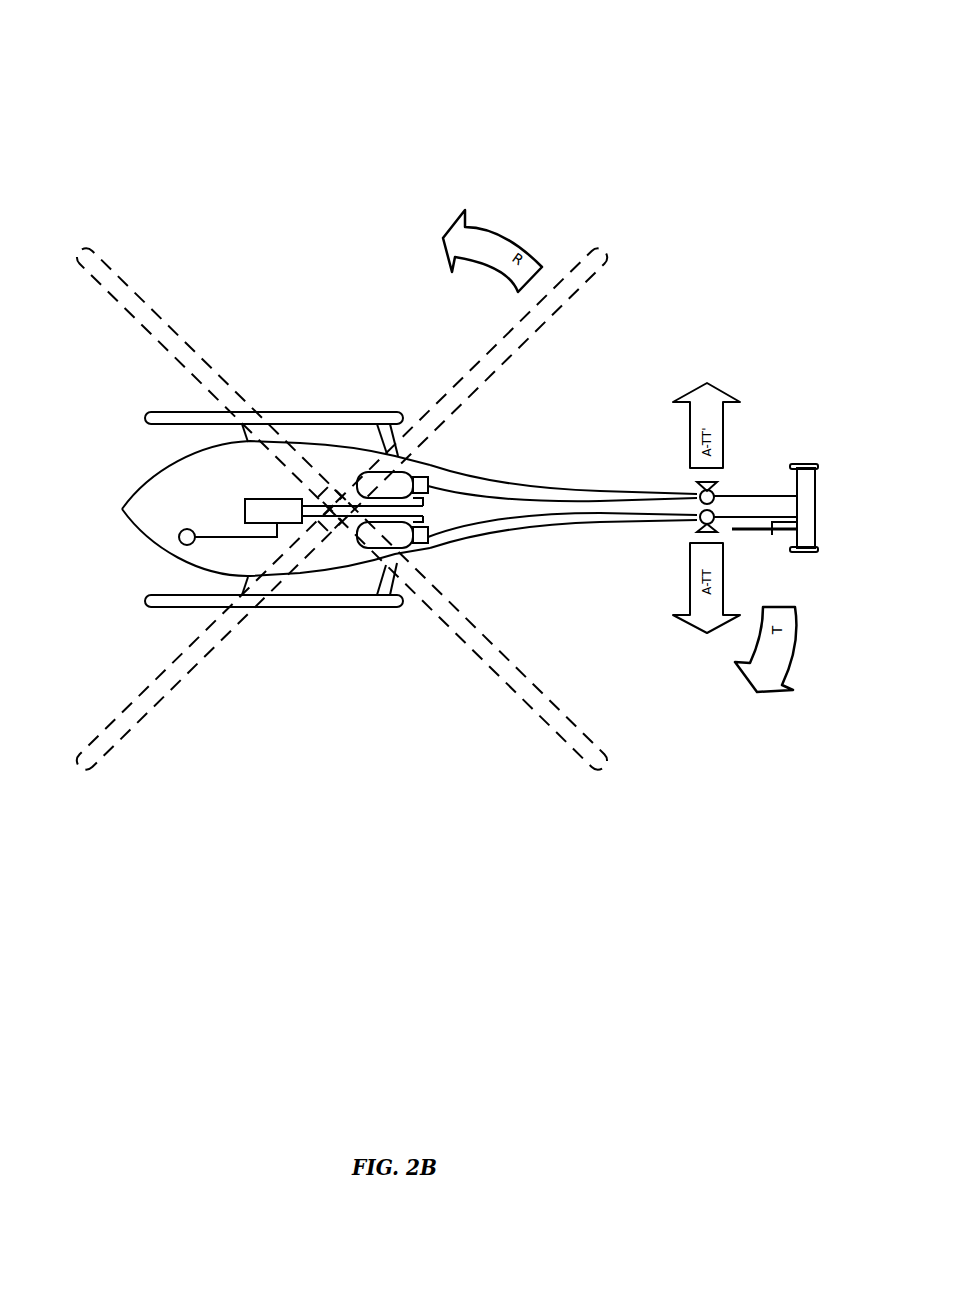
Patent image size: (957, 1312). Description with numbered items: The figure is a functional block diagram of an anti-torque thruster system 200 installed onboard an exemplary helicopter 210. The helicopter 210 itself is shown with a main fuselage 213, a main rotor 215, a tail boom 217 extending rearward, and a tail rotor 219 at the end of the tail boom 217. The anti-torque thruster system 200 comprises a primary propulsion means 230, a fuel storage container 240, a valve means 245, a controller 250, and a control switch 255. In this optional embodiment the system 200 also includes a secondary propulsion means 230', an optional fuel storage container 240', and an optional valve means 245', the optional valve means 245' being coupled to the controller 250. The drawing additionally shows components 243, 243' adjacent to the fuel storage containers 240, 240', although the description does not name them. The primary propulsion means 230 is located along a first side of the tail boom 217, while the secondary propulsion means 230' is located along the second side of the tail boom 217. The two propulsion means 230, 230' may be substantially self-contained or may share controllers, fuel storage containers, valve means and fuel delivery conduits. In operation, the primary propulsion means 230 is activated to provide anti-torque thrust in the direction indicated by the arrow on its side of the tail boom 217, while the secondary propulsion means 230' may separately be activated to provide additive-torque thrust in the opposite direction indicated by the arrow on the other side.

The anti-torque thruster system 200 is at (287, 86).
The helicopter 210 is at (245, 248).
The main fuselage 213 is at (467, 463).
The main rotor 215 is at (480, 360).
The tail boom 217 is at (737, 484).
The tail rotor 219 is at (753, 537).
The primary propulsion means 230 is at (640, 568).
The secondary propulsion means 230' is at (652, 468).
The fuel storage container 240 is at (342, 590).
The optional fuel storage container 240' is at (340, 436).
The gearbox 243 is at (396, 598).
The gearbox 243' is at (389, 427).
The valve means 245 is at (562, 550).
The optional valve means 245' is at (562, 521).
The controller 250 is at (241, 504).
The control switch 255 is at (175, 539).